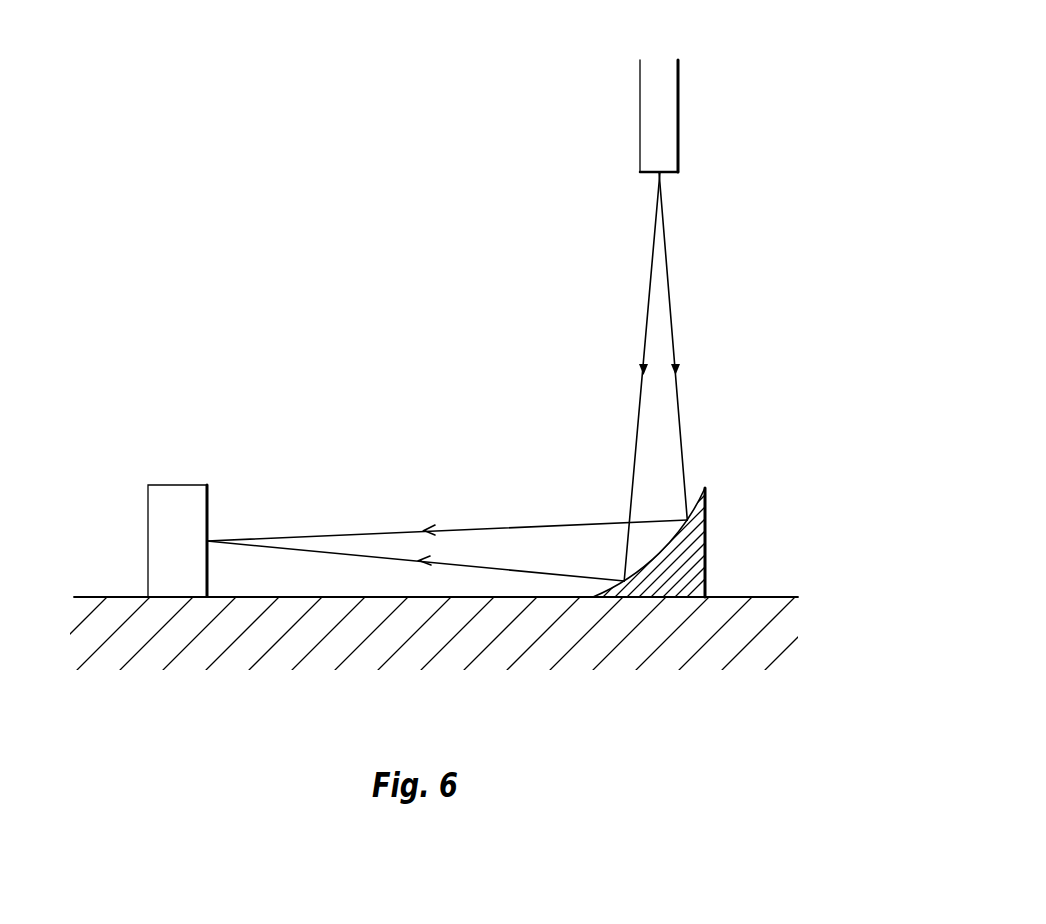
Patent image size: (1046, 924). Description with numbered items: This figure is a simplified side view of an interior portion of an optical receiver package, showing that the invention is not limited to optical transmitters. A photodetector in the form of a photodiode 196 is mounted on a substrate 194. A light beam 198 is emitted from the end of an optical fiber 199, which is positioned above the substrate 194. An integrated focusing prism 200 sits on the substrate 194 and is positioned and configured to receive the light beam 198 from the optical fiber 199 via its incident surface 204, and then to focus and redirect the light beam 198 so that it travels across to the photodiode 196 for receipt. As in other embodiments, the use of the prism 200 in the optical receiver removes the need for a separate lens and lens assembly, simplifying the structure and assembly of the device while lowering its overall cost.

The substrate 194 is at (454, 646).
The photodiode 196 is at (178, 485).
The light beam 198 is at (656, 322).
The optical fiber 199 is at (640, 113).
The integrated focusing prism 200 is at (696, 531).
The incident surface 204 is at (722, 573).